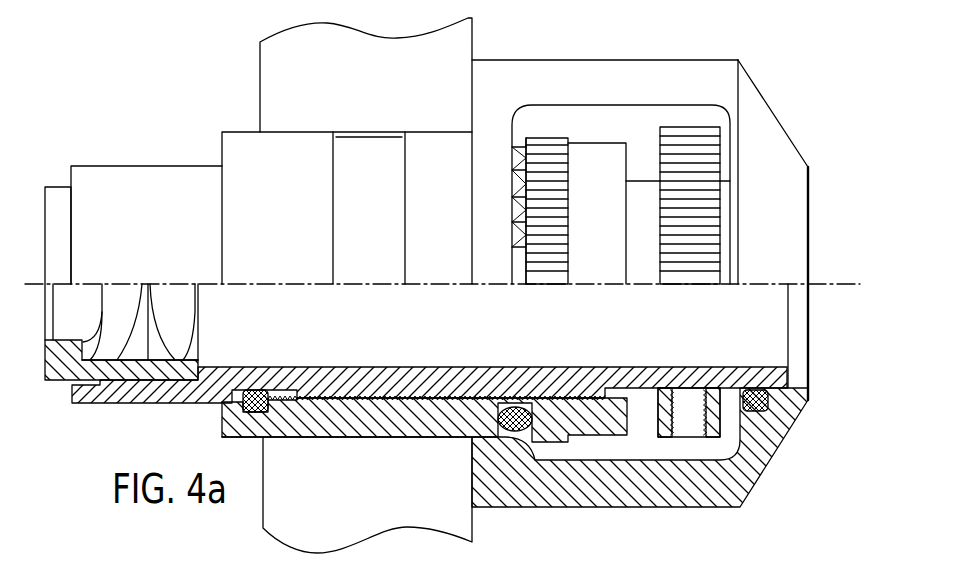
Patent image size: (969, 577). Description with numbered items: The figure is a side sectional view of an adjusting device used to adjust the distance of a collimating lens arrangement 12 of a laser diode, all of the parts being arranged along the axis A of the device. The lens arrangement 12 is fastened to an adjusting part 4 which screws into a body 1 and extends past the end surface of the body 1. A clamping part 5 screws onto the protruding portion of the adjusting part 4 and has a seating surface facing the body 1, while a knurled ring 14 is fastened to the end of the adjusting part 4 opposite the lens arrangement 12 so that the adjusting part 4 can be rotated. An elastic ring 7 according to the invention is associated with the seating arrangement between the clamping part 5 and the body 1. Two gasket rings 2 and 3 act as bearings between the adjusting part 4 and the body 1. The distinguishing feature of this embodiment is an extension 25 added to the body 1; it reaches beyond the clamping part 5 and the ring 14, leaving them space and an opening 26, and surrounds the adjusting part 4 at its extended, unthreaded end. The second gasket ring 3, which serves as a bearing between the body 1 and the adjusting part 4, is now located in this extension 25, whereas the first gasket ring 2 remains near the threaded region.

The body 1 is at (236, 131).
The gasket ring 2 is at (256, 413).
The second gasket ring 3 is at (770, 402).
The adjusting part 4 is at (148, 166).
The clamping part 5 is at (595, 141).
The elastic ring 7 is at (504, 432).
The collimating lens arrangement 12 is at (58, 187).
The knurled ring 14 is at (690, 124).
The extension 25 is at (772, 108).
The opening 26 is at (563, 117).
The axis A is at (818, 280).